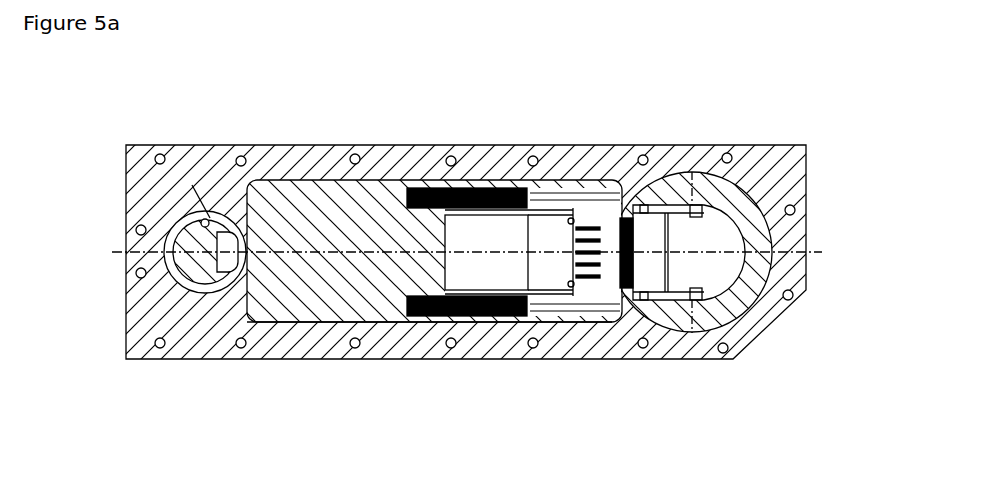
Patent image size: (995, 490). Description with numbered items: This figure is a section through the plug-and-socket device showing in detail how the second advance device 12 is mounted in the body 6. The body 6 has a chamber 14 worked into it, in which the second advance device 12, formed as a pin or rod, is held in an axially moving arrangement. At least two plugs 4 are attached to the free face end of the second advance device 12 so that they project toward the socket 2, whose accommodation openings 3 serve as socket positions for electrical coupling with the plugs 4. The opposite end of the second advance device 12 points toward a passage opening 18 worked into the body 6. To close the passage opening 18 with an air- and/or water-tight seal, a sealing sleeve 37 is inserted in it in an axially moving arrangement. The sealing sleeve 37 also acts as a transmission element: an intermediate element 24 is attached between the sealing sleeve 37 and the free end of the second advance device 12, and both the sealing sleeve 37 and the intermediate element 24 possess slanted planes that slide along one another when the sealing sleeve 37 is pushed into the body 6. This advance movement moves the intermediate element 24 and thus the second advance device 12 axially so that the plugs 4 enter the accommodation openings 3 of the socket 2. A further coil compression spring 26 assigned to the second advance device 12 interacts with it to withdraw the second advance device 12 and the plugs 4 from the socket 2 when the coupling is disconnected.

The socket 2 is at (648, 230).
The accommodation openings 3 is at (713, 223).
The plugs 4 is at (561, 262).
The body 6 is at (262, 160).
The second advance device 12 is at (341, 212).
The chamber 14 is at (313, 323).
The passage opening 18 is at (205, 220).
The intermediate element 24 is at (197, 282).
The further coil compression spring 26 is at (478, 313).
The sealing sleeve 37 is at (181, 218).